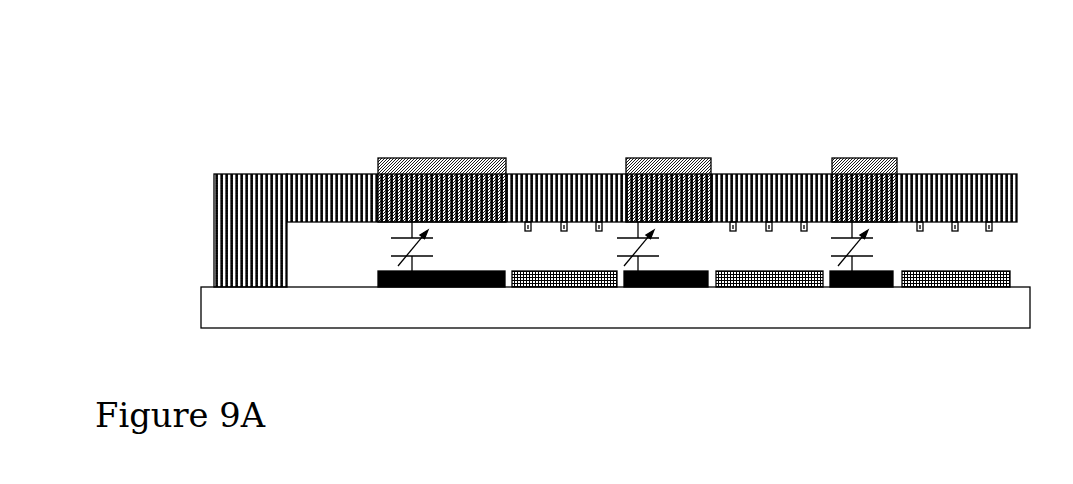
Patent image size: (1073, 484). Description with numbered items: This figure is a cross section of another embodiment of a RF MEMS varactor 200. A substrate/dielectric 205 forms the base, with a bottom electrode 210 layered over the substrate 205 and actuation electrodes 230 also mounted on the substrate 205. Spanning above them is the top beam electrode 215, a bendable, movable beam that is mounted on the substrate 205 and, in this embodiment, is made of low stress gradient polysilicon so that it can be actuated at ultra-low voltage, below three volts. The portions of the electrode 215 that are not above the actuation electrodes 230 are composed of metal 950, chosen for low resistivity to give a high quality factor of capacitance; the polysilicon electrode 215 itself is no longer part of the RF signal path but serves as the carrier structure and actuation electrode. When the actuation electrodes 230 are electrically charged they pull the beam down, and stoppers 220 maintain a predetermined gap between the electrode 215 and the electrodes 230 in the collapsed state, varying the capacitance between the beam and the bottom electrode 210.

The RF MEMS varactor 200 is at (559, 241).
The substrate/dielectric 205 is at (190, 310).
The bottom electrode 210 is at (392, 298).
The top beam electrode 215 is at (203, 235).
The stoppers 220 is at (592, 213).
The actuation electrodes 230 is at (918, 293).
The metal 950 is at (394, 150).